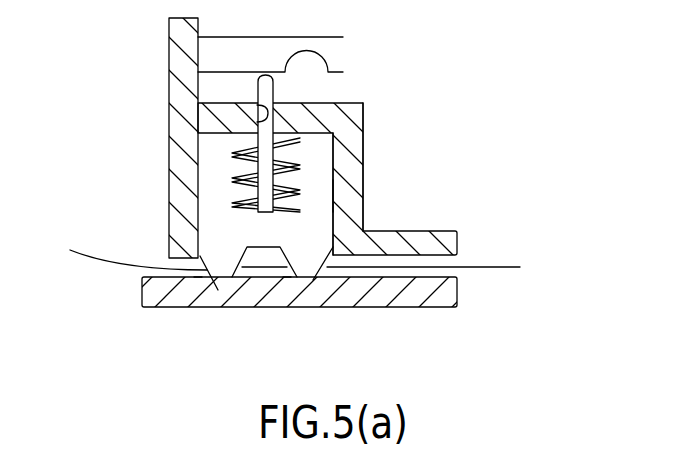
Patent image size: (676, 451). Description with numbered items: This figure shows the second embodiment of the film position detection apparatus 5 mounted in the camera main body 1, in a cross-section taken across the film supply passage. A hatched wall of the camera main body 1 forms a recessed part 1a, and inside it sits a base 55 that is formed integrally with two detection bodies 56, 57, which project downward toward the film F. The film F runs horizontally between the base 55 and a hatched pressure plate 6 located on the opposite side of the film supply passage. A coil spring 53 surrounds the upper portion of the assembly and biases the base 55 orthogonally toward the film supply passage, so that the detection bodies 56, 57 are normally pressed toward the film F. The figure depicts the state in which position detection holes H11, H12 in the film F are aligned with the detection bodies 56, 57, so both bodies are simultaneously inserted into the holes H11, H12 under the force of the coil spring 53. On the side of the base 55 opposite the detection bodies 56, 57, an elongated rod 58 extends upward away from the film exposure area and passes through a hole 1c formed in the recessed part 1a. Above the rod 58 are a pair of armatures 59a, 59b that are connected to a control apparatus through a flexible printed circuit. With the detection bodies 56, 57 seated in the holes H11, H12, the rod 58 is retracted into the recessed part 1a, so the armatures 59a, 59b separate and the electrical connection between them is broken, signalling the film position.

The camera main body 1 is at (431, 236).
The recessed part 1a is at (362, 142).
The hole 1c is at (257, 103).
The detection apparatus 5 is at (455, 74).
The pressure plate 6 is at (393, 292).
The coil spring 53 is at (240, 152).
The base 55 is at (352, 197).
The detection body 56 is at (223, 263).
The detection body 57 is at (311, 262).
The rod 58 is at (268, 94).
The armature 59a is at (343, 72).
The armature 59b is at (343, 37).
The film F is at (505, 265).
The position detection hole H11 is at (197, 290).
The position detection hole H12 is at (287, 290).